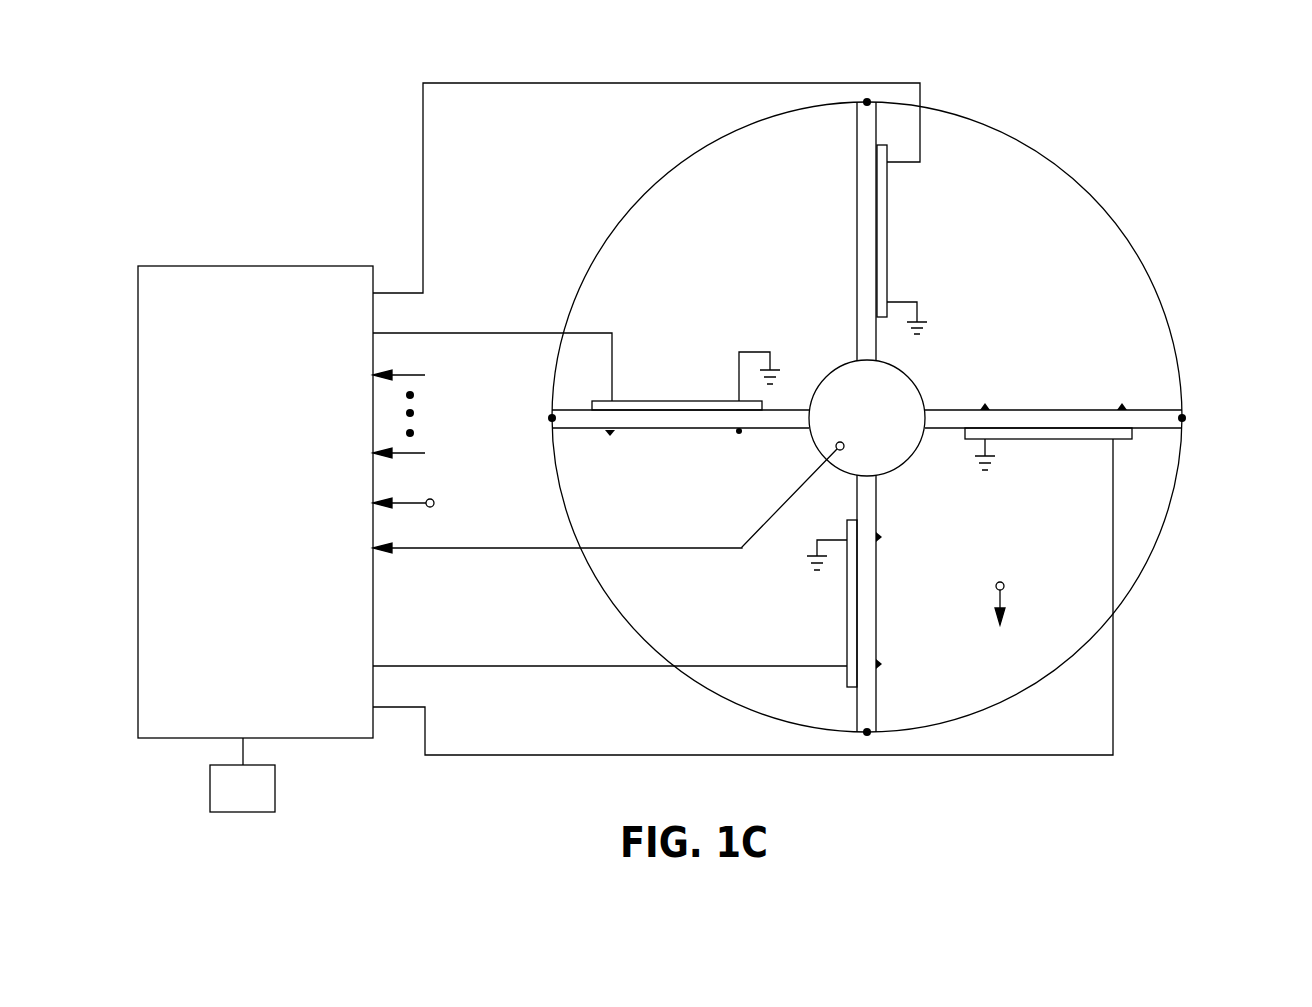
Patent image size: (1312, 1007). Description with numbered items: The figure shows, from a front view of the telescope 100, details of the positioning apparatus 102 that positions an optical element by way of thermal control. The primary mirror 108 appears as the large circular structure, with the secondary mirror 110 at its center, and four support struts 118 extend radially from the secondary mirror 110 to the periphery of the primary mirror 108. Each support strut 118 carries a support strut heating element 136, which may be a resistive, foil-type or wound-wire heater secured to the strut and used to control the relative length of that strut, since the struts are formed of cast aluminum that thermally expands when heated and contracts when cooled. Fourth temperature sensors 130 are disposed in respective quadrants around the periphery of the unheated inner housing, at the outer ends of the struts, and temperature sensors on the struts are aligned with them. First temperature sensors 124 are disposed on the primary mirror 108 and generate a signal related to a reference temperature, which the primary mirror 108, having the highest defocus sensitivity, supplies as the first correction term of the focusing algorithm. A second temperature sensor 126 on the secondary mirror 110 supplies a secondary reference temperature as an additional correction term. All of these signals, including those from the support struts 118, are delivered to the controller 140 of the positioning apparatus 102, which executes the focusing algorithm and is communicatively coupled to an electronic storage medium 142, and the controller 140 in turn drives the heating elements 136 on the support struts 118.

The telescope 100 is at (1215, 228).
The positioning apparatus 102 is at (308, 177).
The primary mirror 108 is at (1147, 568).
The secondary mirror 110 is at (905, 457).
The support struts 118 is at (858, 238).
The first temperature sensors 124 is at (432, 497).
The second temperature sensors 126 is at (838, 452).
The fourth temperature sensors 130 is at (867, 100).
The support strut heating elements 136 is at (887, 226).
The controller 140 is at (278, 533).
The electronic storage medium 142 is at (265, 803).